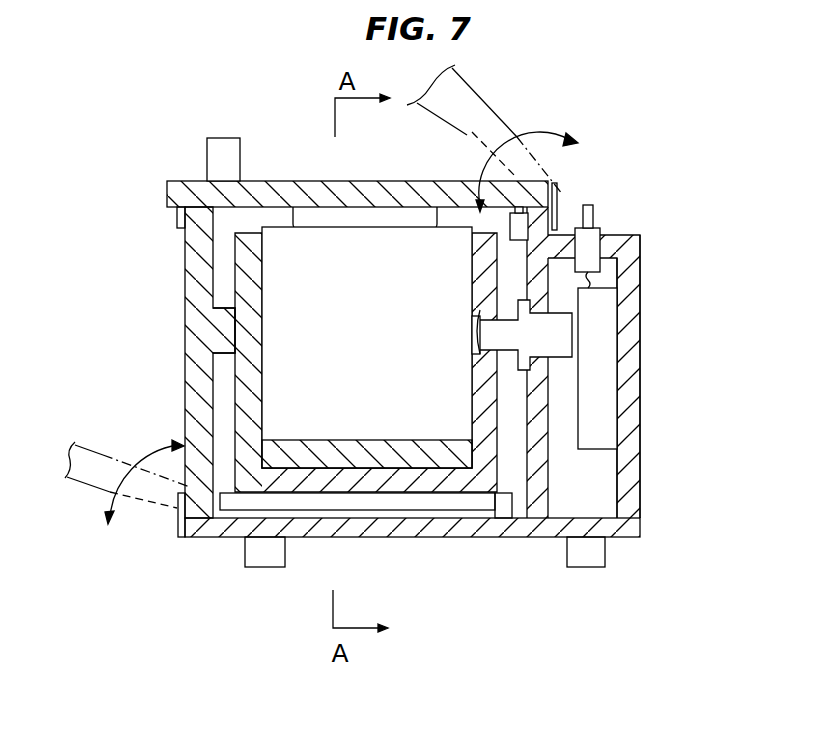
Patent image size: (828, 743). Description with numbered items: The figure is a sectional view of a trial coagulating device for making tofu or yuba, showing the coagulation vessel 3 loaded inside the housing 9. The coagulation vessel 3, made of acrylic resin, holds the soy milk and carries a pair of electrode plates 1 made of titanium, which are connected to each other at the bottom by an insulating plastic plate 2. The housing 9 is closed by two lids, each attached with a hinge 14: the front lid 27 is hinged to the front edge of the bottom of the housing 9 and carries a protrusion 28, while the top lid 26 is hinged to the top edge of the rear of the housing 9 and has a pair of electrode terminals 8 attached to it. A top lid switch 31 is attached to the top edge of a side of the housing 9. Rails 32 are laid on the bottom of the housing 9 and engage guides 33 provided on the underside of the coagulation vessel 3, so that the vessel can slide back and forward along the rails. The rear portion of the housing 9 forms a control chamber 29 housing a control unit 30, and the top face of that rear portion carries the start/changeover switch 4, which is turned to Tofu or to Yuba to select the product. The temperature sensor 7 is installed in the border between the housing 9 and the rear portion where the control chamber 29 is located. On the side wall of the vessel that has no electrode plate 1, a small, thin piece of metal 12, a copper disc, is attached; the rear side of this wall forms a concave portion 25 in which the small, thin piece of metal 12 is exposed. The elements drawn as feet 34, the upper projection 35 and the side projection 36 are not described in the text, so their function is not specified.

The electrode plate 1 is at (346, 307).
The insulating plastic plate 2 is at (346, 450).
The coagulation vessel 3 is at (258, 362).
The start/changeover switch 4 is at (596, 216).
The temperature sensor 7 is at (565, 325).
The electrode terminal 8 is at (375, 218).
The housing 9 is at (538, 428).
The small, thin piece of metal 12 is at (390, 326).
The hinge 14 is at (557, 193).
The concave portion 25 is at (480, 358).
The top lid 26 is at (278, 181).
The front lid 27 is at (185, 284).
The protrusion 28 is at (215, 332).
The control chamber 29 is at (602, 482).
The control unit 30 is at (604, 376).
The top lid switch 31 is at (522, 228).
The rail 32 is at (503, 505).
The guide 33 is at (430, 500).
The leg 34 is at (260, 566).
The upper projection 35 is at (225, 138).
The side projection 36 is at (177, 216).